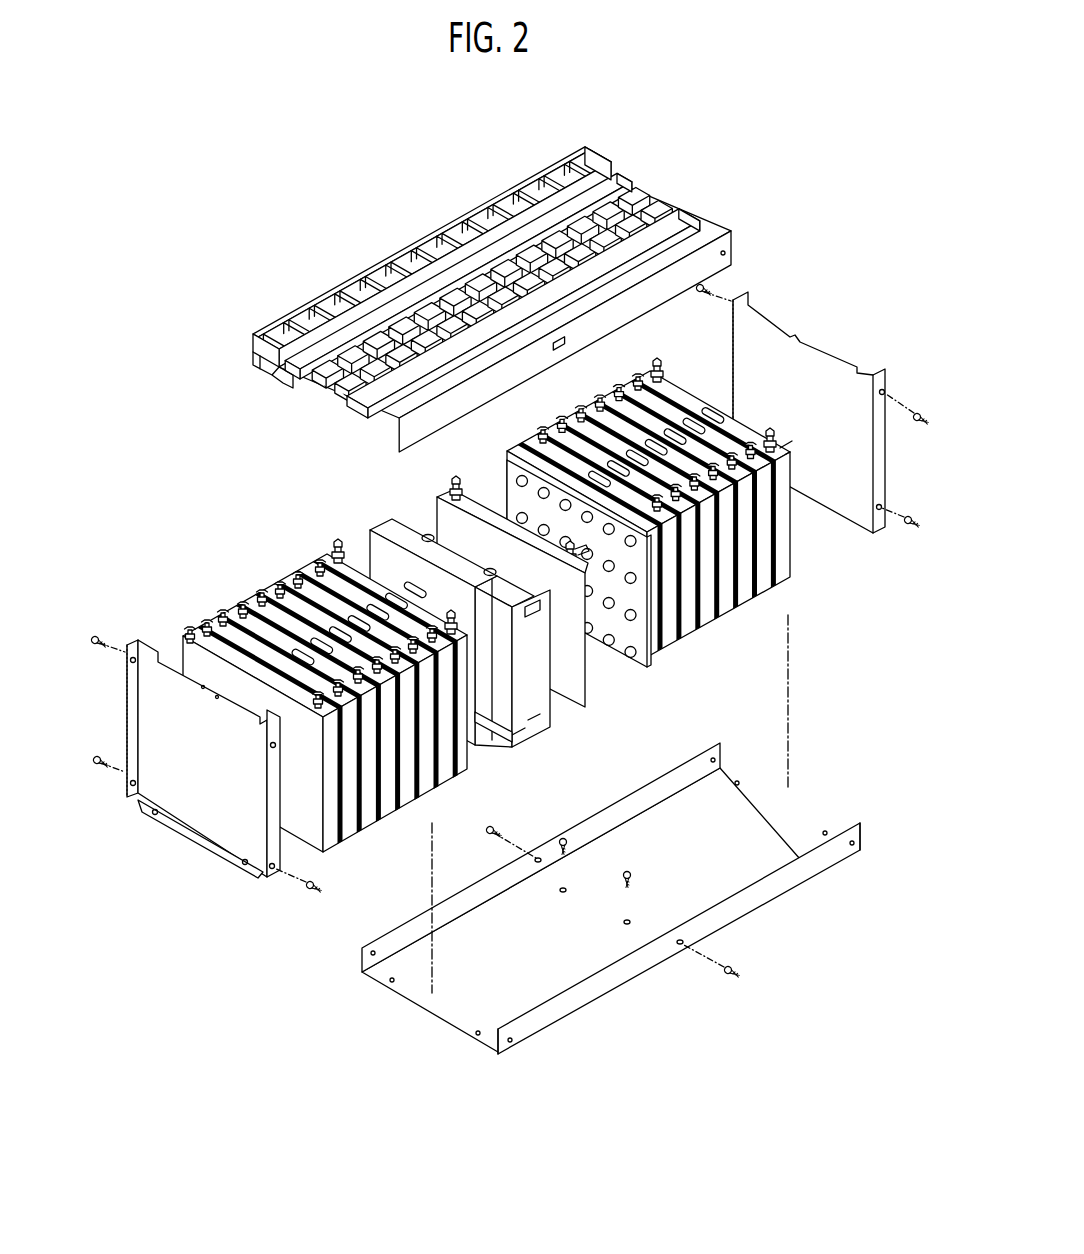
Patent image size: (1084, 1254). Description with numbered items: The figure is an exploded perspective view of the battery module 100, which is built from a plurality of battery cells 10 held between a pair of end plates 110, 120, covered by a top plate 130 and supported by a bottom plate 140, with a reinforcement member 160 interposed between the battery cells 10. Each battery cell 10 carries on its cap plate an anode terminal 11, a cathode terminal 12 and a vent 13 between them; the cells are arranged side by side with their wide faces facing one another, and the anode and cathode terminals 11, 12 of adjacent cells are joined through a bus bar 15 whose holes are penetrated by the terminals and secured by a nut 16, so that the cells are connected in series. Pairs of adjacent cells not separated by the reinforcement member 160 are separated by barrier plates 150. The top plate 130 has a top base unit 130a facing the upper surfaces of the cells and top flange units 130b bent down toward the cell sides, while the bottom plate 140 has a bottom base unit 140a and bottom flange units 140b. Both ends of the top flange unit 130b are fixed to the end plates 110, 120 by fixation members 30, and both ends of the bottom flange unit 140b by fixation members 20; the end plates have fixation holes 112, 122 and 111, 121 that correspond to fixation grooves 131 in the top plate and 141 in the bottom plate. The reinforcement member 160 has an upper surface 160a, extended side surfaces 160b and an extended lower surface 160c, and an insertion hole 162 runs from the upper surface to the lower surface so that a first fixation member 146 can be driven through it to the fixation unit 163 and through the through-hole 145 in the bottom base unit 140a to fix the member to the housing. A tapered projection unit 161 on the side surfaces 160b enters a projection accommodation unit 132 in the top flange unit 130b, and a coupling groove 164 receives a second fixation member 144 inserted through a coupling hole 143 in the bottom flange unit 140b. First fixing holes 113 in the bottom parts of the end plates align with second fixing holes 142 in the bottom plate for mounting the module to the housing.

The battery module 100 is at (207, 263).
The battery cell 10 is at (686, 483).
The anode terminal 11 is at (658, 365).
The cathode terminal 12 is at (771, 430).
The vent 13 is at (698, 405).
The bus bar 15 is at (792, 456).
The nut 16 is at (788, 448).
The fixation member 20 is at (907, 528).
The fixation member 30 is at (917, 410).
The end plate 110 is at (182, 810).
The fixation hole 111 is at (130, 800).
The fixation hole 112 is at (280, 747).
The first fixing hole 113 is at (245, 862).
The end plate 120 is at (835, 431).
The fixation hole 121 is at (878, 509).
The fixation hole 122 is at (882, 390).
The top plate 130 is at (533, 304).
The top base unit 130a is at (690, 212).
The top flange unit 130b is at (722, 258).
The fixation groove 131 is at (395, 450).
The projection accommodation unit 132 is at (561, 351).
The bottom plate 140 is at (582, 849).
The bottom base unit 140a is at (590, 958).
The bottom flange unit 140b is at (580, 995).
The fixation groove 141 is at (715, 760).
The second fixing hole 142 is at (740, 786).
The coupling hole 143 is at (682, 944).
The second fixation member 144 is at (732, 972).
The through-hole 145 is at (625, 924).
The first fixation member 146 is at (628, 866).
The barrier plate 150 is at (508, 467).
The reinforcement member 160 is at (491, 636).
The upper surface 160a is at (560, 580).
The side surface 160b is at (545, 655).
The lower surface 160c is at (520, 740).
The projection unit 161 is at (533, 618).
The insertion hole 162 is at (428, 533).
The fixation unit 163 is at (482, 722).
The coupling groove 164 is at (533, 720).